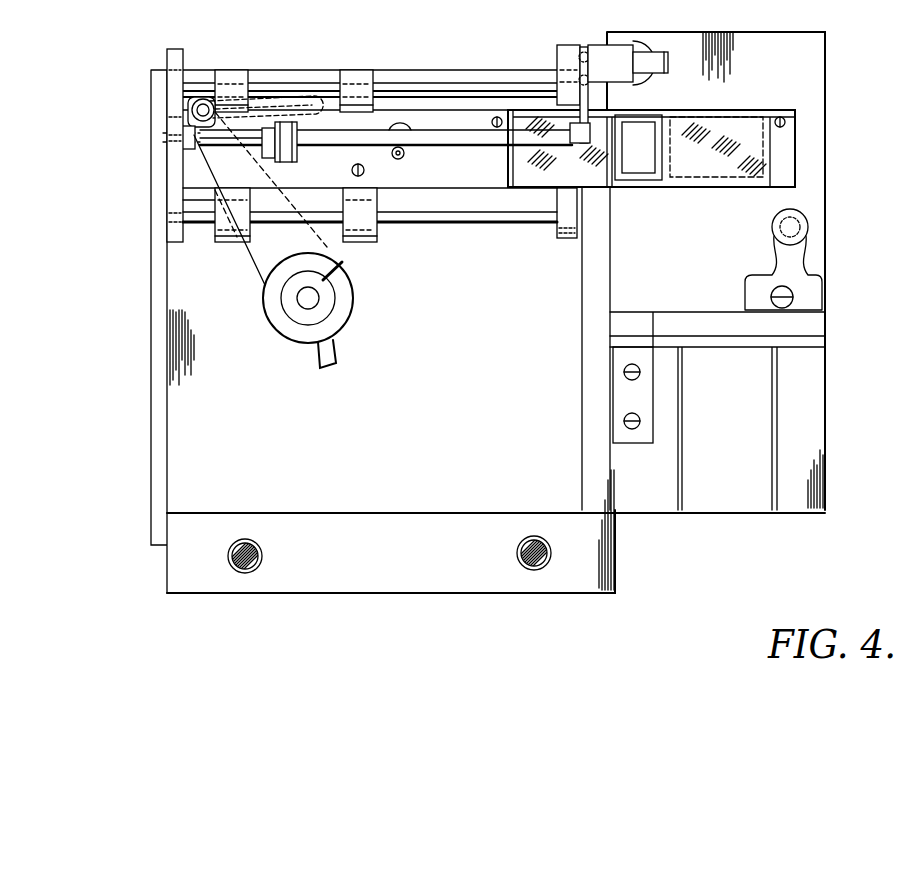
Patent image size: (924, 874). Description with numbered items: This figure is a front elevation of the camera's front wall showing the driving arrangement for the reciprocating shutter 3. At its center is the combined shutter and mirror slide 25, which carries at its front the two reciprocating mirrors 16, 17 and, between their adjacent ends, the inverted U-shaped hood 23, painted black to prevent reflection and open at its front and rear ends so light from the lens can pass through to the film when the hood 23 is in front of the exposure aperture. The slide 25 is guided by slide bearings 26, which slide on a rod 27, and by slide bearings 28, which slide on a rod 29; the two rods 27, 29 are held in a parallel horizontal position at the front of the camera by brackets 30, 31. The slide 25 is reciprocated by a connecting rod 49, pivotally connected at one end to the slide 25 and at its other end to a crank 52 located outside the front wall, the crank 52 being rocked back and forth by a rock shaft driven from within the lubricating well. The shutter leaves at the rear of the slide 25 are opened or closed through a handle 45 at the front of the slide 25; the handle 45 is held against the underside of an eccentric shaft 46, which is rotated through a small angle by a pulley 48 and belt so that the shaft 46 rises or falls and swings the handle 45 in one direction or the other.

The reciprocating shutter 3 is at (654, 108).
The reciprocating mirror 16 is at (560, 172).
The reciprocating mirror 17 is at (753, 135).
The inverted U-shaped hood 23 is at (660, 165).
The combined shutter and mirror slide 25 is at (437, 205).
The slide bearings 26 is at (231, 72).
The rod 27 is at (400, 88).
The slide bearings 28 is at (223, 247).
The rod 29 is at (489, 231).
The bracket 30 is at (167, 55).
The bracket 31 is at (563, 55).
The handle 45 is at (402, 158).
The eccentric shaft 46 is at (442, 130).
The pulley 48 is at (296, 158).
The connecting rod 49 is at (273, 93).
The crank 52 is at (253, 267).